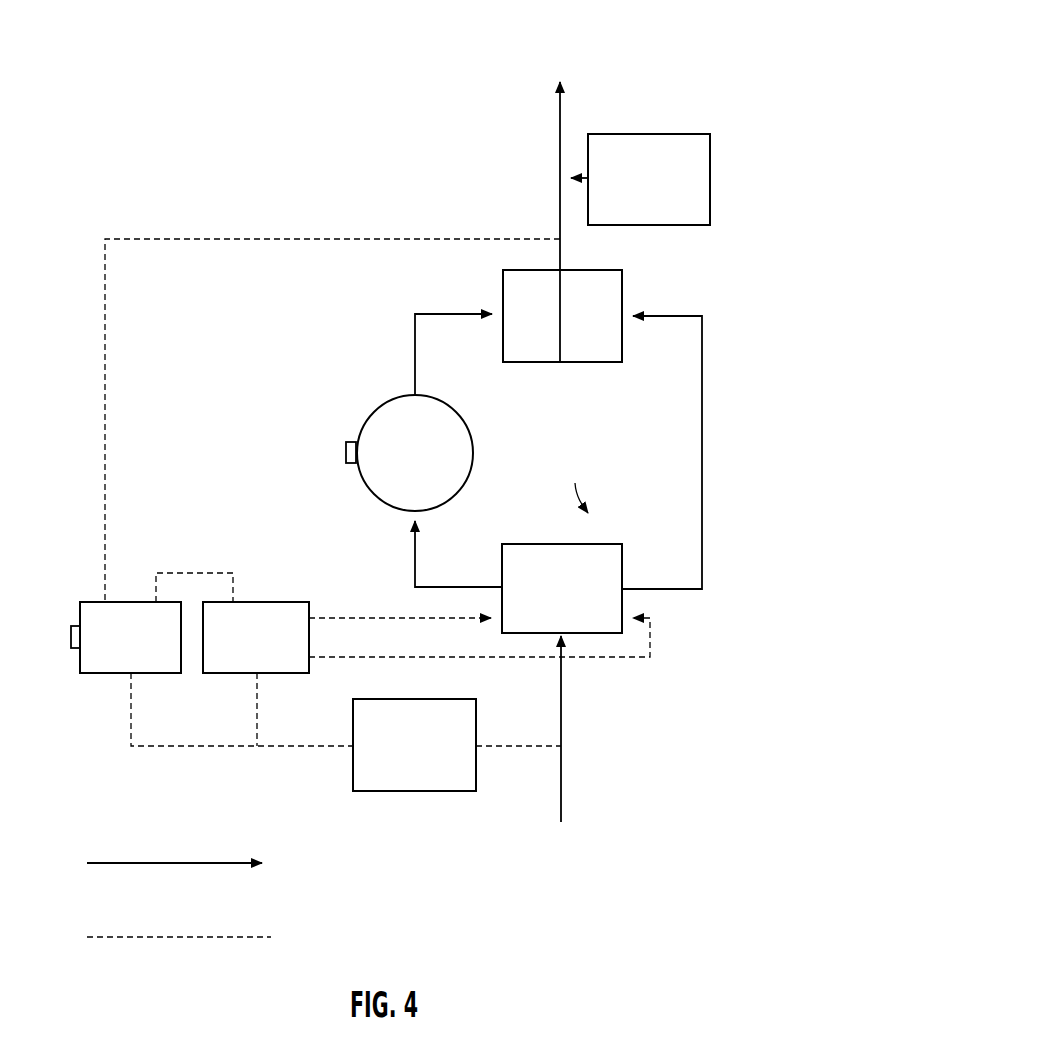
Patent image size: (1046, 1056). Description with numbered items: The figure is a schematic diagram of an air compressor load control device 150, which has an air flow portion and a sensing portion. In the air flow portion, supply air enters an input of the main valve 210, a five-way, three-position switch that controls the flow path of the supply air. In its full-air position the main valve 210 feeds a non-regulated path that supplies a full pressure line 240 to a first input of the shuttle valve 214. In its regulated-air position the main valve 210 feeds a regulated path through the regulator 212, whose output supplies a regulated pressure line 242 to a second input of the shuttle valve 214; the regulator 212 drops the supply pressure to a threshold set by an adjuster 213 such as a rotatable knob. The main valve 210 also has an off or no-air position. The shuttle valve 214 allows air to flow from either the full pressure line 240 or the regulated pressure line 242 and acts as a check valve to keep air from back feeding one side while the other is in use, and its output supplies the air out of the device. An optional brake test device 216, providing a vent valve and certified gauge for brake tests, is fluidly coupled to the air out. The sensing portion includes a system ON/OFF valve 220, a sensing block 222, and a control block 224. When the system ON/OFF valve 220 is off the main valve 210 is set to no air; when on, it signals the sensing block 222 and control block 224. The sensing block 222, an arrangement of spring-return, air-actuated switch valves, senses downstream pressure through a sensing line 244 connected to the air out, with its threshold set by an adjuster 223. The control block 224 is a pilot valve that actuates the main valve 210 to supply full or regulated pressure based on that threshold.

The air compressor load control device 150 is at (316, 130).
The main valve 210 is at (579, 590).
The regulator 212 is at (428, 479).
The adjuster 213 is at (346, 452).
The shuttle valve 214 is at (579, 329).
The brake test device 216 is at (661, 191).
The system ON/OFF valve 220 is at (431, 759).
The sensing block 222 is at (147, 649).
The adjuster 223 is at (71, 628).
The control block 224 is at (273, 649).
The full pressure line 240 is at (703, 448).
The regulated pressure line 242 is at (407, 360).
The sensing line 244 is at (337, 239).